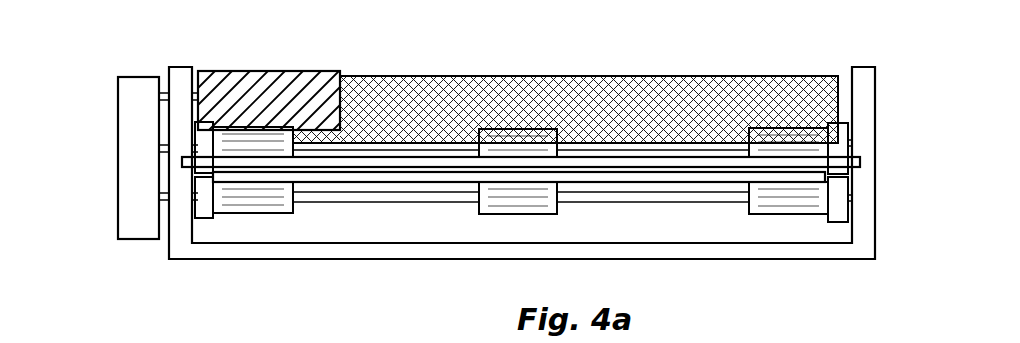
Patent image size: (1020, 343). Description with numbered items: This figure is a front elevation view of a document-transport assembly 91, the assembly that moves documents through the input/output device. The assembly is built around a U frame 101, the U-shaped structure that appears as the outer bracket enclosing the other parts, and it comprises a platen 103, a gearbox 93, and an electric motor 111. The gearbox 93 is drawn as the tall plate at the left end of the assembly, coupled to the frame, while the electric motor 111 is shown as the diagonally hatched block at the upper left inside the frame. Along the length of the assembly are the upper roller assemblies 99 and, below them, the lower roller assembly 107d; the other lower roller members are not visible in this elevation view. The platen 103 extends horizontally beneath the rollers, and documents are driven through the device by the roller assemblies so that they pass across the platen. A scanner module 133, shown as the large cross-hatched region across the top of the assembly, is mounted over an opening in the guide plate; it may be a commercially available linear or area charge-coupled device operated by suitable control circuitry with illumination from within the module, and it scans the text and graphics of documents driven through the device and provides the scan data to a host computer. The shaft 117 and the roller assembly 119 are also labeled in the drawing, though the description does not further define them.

The document-transport assembly 91 is at (77, 150).
The gearbox 93 is at (125, 191).
The upper roller assemblies 99 is at (523, 142).
The U frame 101 is at (864, 77).
The platen 103 is at (360, 175).
The lower roller assembly 107d is at (523, 193).
The electric motor 111 is at (232, 75).
The shaft 117 is at (603, 163).
The coil bobbin 119 is at (758, 140).
The scanner module 133 is at (406, 80).